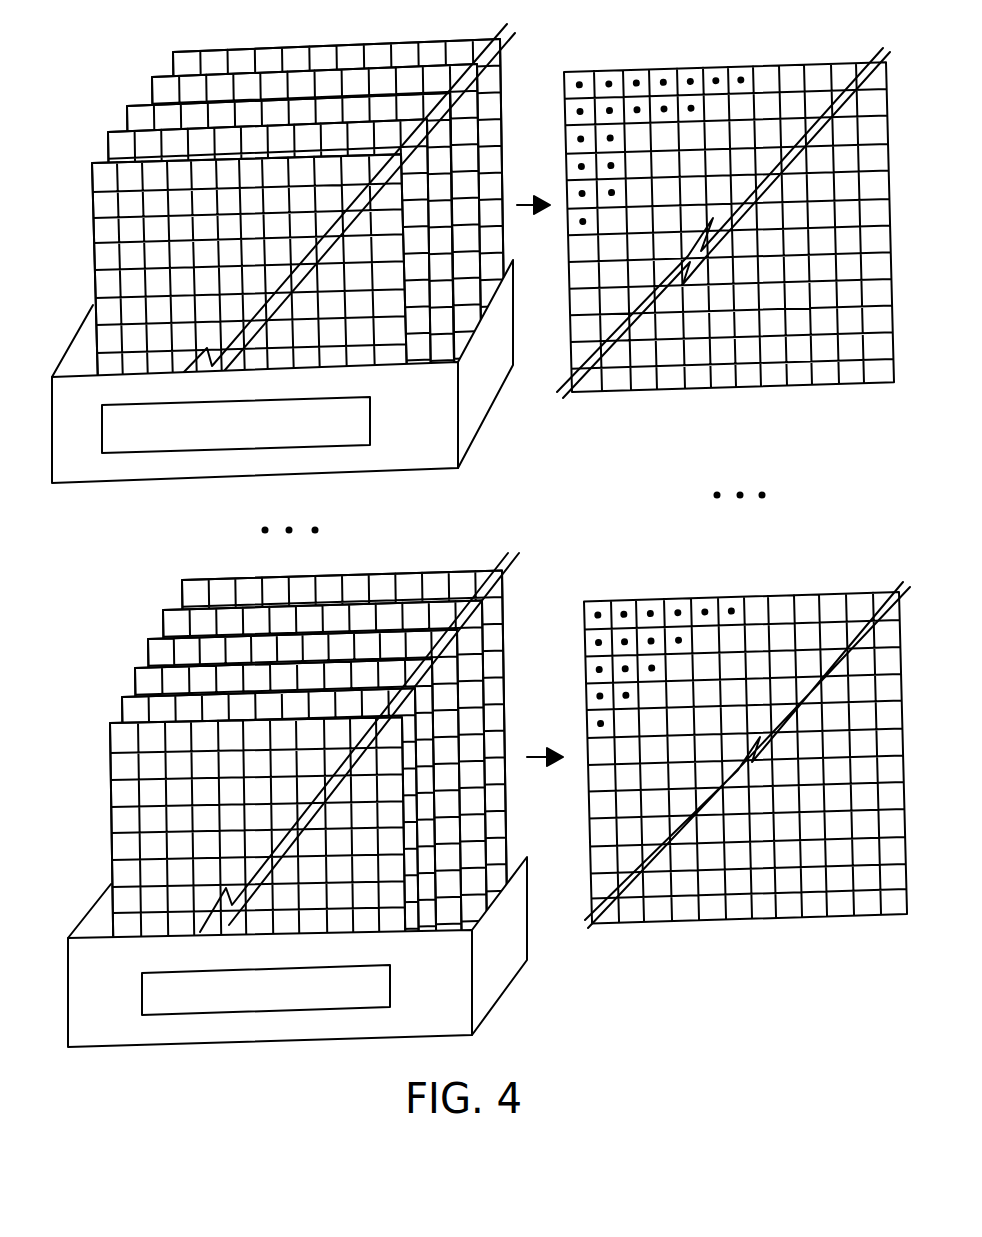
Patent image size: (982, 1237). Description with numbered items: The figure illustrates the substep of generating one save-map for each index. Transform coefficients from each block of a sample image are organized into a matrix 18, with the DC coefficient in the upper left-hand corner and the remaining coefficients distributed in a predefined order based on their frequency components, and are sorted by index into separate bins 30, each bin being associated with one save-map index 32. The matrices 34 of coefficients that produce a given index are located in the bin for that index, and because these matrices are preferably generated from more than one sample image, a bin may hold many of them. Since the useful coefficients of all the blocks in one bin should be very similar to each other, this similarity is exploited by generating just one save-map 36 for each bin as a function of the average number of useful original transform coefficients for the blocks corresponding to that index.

The matrix 18 is at (482, 645).
The bin 30 is at (477, 412).
The save-map index 32 is at (410, 1006).
The matrices of coefficients 34 is at (314, 495).
The save-map 36 is at (773, 383).